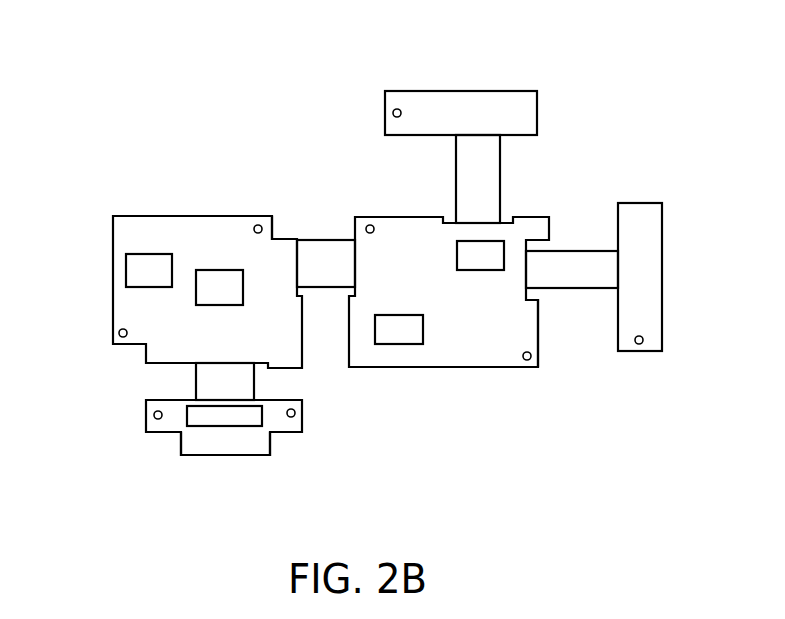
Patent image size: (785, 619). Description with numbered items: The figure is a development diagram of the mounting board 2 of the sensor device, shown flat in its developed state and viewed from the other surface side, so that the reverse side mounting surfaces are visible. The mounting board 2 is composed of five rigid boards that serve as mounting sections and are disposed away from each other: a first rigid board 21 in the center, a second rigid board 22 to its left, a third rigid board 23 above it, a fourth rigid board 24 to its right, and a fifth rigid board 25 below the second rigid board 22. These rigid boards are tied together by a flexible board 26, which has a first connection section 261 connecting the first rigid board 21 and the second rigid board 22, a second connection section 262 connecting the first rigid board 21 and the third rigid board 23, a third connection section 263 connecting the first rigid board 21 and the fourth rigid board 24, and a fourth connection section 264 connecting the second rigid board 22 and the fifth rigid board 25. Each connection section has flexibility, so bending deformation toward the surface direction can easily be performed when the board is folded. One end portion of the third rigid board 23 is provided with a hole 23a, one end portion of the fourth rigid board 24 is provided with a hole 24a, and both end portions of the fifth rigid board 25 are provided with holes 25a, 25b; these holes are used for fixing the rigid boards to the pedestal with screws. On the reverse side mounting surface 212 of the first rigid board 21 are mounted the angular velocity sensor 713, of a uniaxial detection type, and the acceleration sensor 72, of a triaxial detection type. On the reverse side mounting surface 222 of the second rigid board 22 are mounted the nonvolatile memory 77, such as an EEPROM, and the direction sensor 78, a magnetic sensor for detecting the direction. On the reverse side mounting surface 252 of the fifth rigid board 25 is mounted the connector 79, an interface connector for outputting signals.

The mounting board 2 is at (639, 91).
The first rigid board 21 is at (475, 372).
The reverse side mounting surface 212 is at (492, 341).
The second rigid board 22 is at (145, 214).
The reverse side mounting surface 222 is at (282, 253).
The third rigid board 23 is at (419, 87).
The hole 23a is at (392, 111).
The fourth rigid board 24 is at (666, 246).
The hole 24a is at (643, 346).
The fifth rigid board 25 is at (197, 460).
The hole 25a is at (154, 415).
The hole 25b is at (289, 422).
The reverse side mounting surface 252 is at (190, 443).
The flexible board 26 is at (575, 242).
The first connection section 261 is at (328, 255).
The second connection section 262 is at (468, 158).
The third connection section 263 is at (582, 272).
The fourth connection section 264 is at (207, 385).
The acceleration sensor 72 is at (398, 340).
The nonvolatile memory 77 is at (218, 282).
The direction sensor 78 is at (137, 270).
The connector 79 is at (218, 417).
The angular velocity sensor 713 is at (470, 255).